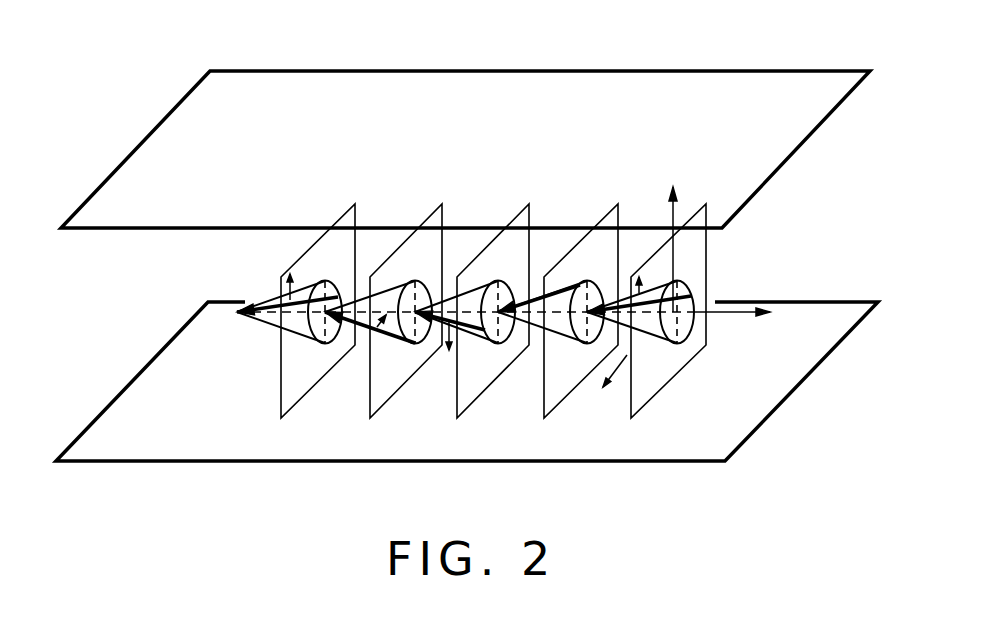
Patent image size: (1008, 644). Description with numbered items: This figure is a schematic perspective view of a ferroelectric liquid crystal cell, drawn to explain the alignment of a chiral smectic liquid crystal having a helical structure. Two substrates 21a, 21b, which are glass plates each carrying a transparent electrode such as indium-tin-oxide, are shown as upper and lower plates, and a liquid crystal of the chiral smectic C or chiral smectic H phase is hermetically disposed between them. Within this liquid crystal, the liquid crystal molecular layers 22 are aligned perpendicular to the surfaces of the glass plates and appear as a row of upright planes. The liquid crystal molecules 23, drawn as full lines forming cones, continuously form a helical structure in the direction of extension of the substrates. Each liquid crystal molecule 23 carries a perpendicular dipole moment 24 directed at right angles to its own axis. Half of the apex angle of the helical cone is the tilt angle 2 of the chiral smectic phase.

The substrate 21a is at (766, 92).
The substrate 21b is at (766, 395).
The liquid crystal molecular layers 22 is at (698, 268).
The liquid crystal molecules 23 is at (267, 321).
The tilt angle Ⓗ 2 is at (357, 334).
The dipole moment (P⊥) 24 is at (290, 272).